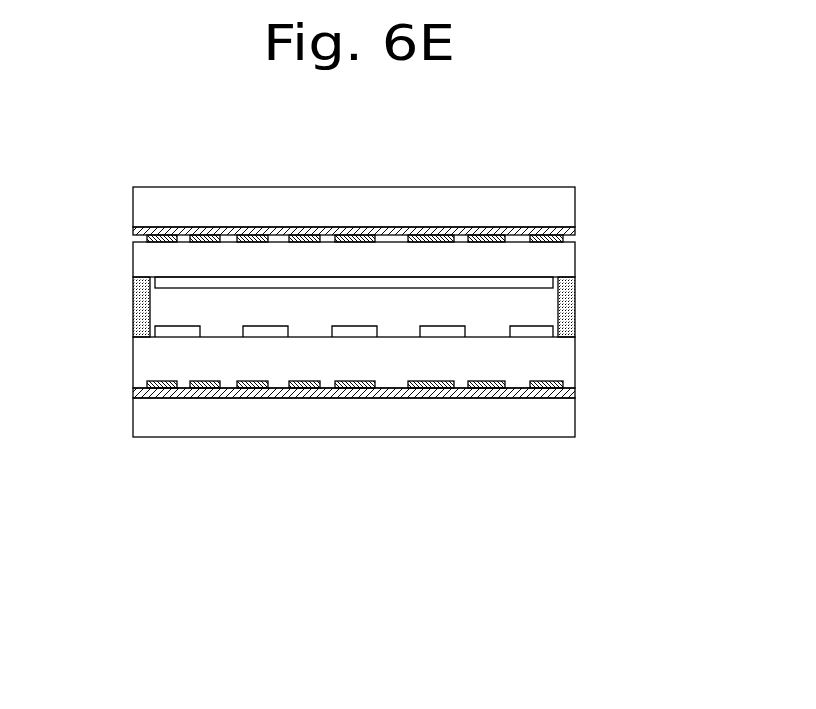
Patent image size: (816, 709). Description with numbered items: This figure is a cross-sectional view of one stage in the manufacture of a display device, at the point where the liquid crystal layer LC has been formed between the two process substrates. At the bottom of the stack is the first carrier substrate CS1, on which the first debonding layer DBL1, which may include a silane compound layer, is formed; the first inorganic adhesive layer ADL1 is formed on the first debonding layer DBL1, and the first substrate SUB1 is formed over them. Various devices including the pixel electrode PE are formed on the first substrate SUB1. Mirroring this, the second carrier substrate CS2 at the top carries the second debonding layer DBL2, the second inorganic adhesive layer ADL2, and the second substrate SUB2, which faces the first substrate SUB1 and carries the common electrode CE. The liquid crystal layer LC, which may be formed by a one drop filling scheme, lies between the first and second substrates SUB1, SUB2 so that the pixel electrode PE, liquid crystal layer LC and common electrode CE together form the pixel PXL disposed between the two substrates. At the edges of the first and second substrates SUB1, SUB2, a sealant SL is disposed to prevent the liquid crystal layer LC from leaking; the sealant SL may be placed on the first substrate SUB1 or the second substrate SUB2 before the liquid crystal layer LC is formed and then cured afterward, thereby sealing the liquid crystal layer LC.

The second carrier substrate CS2 is at (562, 201).
The second debonding layer DBL2 is at (557, 230).
The second inorganic adhesive layer ADL2 is at (546, 243).
The second substrate SUB2 is at (562, 265).
The common electrode CE is at (550, 282).
The liquid crystal layer LC is at (540, 303).
The pixel electrode PE is at (547, 331).
The first substrate SUB1 is at (562, 355).
The first inorganic adhesive layer ADL1 is at (548, 381).
The first debonding layer DBL1 is at (556, 393).
The first carrier substrate CS1 is at (562, 425).
The sealant SL is at (142, 300).
The pixel PXL is at (673, 272).